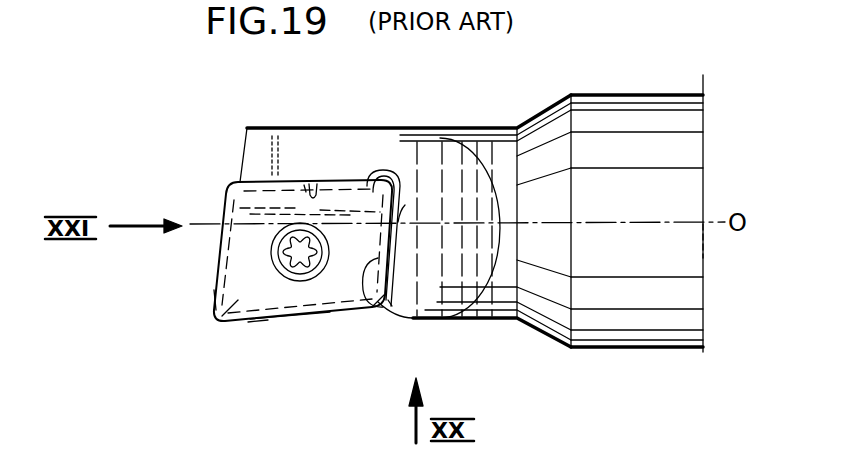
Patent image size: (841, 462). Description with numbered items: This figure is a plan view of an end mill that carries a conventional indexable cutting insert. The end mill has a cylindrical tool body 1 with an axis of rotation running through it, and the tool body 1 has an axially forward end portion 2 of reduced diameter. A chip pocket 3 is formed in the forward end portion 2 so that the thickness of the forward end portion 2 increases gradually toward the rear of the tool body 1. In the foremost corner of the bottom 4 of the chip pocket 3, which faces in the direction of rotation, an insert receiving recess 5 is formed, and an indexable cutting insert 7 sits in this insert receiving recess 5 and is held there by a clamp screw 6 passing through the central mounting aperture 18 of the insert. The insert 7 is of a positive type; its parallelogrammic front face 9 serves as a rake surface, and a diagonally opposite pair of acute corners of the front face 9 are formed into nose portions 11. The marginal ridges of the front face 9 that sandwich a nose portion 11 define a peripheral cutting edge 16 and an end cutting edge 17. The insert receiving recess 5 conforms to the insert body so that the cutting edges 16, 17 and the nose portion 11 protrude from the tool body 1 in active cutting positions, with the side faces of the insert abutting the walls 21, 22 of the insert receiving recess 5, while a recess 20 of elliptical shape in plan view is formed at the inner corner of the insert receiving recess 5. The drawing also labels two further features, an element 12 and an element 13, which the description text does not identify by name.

The tool body 1 is at (639, 96).
The forward end portion 2 is at (460, 115).
The chip pocket 3 is at (470, 195).
The bottom of the chip pocket 4 is at (340, 146).
The insert receiving recess 5 is at (354, 300).
The clamp screw 6 is at (323, 234).
The indexable cutting insert 7 is at (292, 356).
The front face 9 is at (256, 295).
The nose portion 11 is at (398, 172).
The locating pin 12 is at (351, 182).
The shim 13 is at (396, 266).
The peripheral cutting edge 16 is at (253, 328).
The end cutting edge 17 is at (198, 298).
The central mounting aperture 18 is at (272, 261).
The recess 20 is at (401, 206).
The wall of the insert receiving recess 21 is at (307, 181).
The wall of the insert receiving recess 22 is at (380, 320).